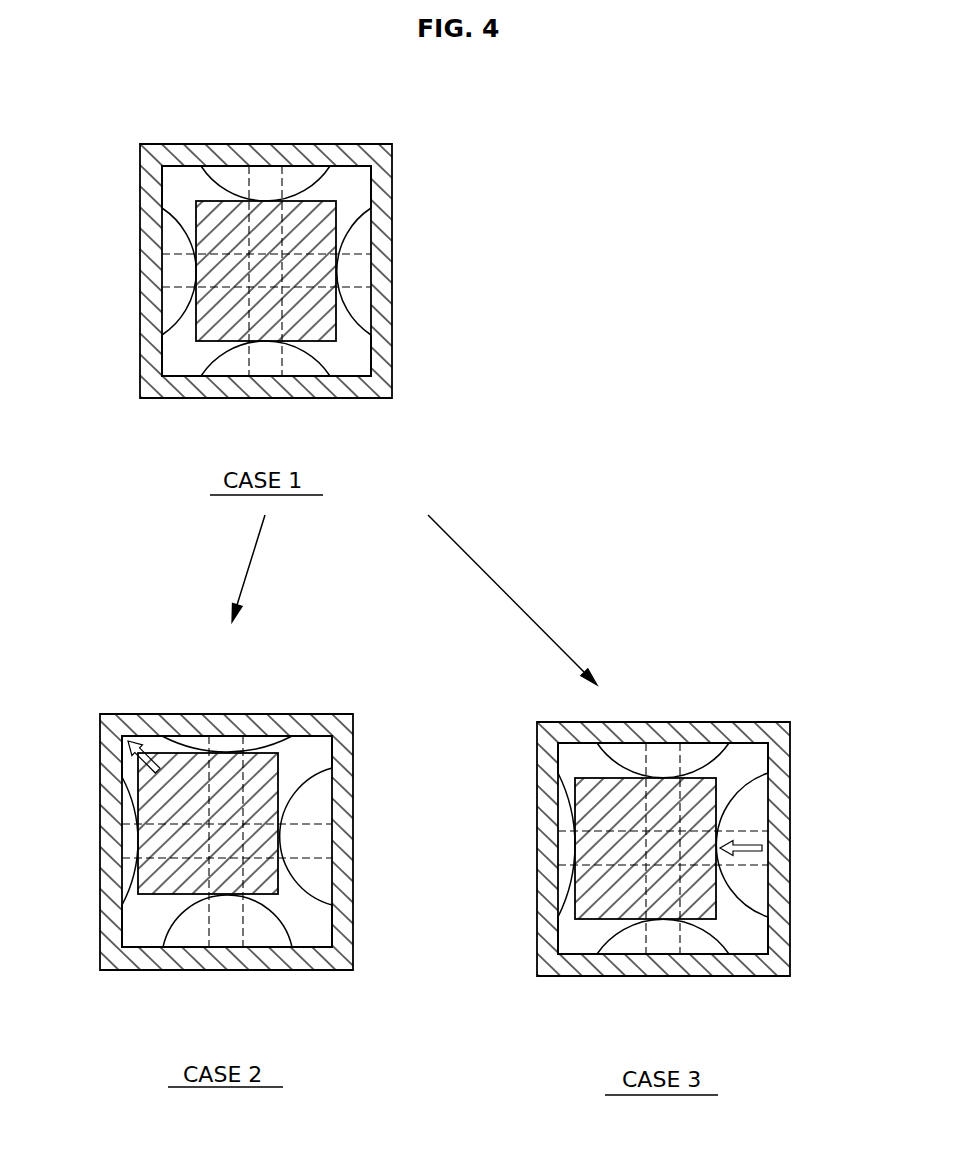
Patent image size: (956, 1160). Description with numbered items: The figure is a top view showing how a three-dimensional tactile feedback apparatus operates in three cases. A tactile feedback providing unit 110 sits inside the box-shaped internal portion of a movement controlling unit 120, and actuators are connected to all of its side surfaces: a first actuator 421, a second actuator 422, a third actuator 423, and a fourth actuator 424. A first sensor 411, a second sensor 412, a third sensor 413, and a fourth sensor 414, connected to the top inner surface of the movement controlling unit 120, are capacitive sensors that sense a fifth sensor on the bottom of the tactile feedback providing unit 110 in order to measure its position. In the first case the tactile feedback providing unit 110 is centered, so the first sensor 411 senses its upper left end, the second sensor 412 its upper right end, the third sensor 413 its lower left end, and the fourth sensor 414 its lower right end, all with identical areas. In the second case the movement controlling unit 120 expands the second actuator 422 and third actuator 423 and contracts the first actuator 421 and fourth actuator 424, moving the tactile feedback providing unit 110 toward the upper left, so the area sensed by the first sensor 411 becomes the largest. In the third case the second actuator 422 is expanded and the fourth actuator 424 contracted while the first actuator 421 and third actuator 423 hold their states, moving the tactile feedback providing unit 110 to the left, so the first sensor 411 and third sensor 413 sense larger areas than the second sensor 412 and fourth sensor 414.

The tactile feedback providing unit 110 is at (362, 208).
The movement controlling unit 120 is at (138, 213).
The first sensor 411 is at (180, 187).
The second sensor 412 is at (350, 183).
The third sensor 413 is at (180, 360).
The fourth sensor 414 is at (353, 360).
The first actuator 421 is at (265, 180).
The second actuator 422 is at (353, 270).
The third actuator 423 is at (266, 362).
The fourth actuator 424 is at (180, 270).